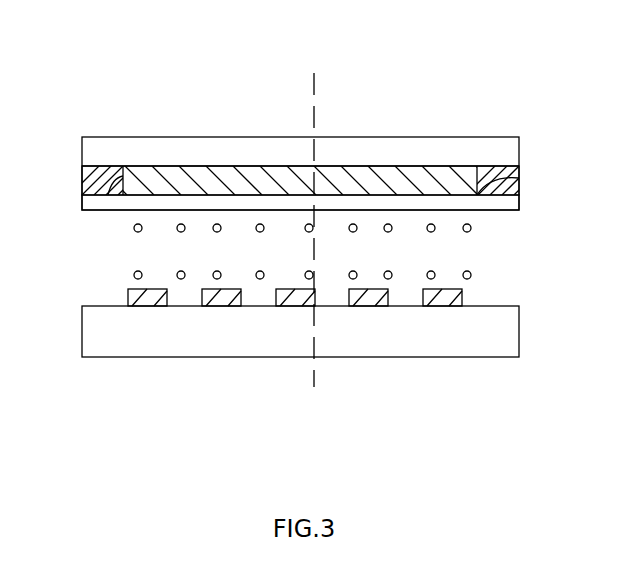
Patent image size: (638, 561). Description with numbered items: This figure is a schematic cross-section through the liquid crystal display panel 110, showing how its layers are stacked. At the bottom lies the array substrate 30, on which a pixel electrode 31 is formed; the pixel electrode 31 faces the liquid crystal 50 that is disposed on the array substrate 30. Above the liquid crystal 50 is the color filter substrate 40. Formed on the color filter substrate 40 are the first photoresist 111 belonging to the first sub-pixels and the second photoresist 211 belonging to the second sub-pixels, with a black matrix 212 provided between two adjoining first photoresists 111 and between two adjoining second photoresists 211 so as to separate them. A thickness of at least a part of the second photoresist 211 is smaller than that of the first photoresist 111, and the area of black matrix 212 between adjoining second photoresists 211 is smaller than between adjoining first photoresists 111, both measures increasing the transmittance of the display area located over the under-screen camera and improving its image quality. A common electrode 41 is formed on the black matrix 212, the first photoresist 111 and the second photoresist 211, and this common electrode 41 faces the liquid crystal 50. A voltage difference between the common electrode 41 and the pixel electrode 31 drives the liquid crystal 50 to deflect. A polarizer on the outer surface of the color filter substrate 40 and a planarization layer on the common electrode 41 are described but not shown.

The liquid crystal display panel 110 is at (282, 43).
The color filter substrate 40 is at (490, 152).
The common electrode 41 is at (107, 203).
The first photoresist 111 is at (326, 198).
The second photoresist 211 is at (148, 172).
The black matrix 212 is at (103, 185).
The liquid crystal 50 is at (134, 229).
The pixel electrode 31 is at (130, 293).
The array substrate 30 is at (130, 342).